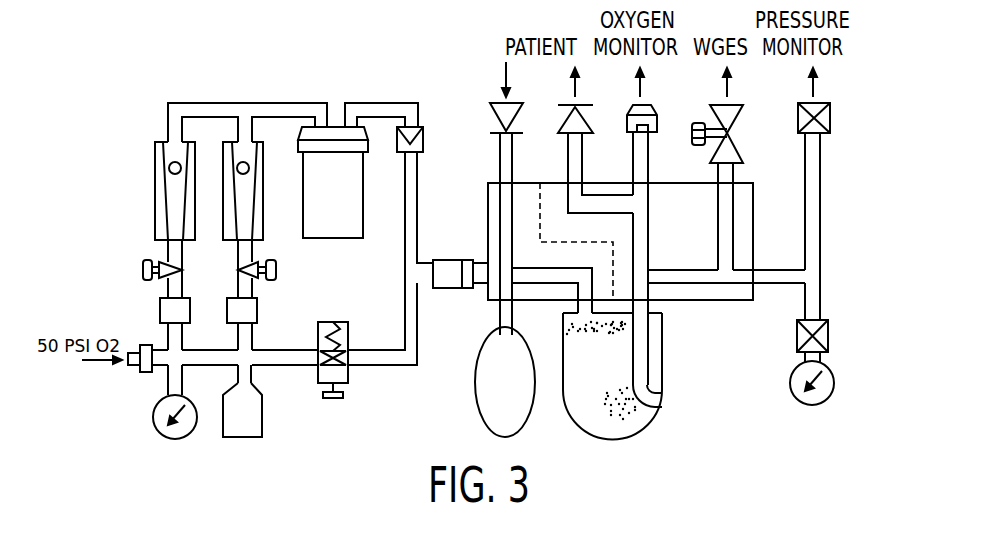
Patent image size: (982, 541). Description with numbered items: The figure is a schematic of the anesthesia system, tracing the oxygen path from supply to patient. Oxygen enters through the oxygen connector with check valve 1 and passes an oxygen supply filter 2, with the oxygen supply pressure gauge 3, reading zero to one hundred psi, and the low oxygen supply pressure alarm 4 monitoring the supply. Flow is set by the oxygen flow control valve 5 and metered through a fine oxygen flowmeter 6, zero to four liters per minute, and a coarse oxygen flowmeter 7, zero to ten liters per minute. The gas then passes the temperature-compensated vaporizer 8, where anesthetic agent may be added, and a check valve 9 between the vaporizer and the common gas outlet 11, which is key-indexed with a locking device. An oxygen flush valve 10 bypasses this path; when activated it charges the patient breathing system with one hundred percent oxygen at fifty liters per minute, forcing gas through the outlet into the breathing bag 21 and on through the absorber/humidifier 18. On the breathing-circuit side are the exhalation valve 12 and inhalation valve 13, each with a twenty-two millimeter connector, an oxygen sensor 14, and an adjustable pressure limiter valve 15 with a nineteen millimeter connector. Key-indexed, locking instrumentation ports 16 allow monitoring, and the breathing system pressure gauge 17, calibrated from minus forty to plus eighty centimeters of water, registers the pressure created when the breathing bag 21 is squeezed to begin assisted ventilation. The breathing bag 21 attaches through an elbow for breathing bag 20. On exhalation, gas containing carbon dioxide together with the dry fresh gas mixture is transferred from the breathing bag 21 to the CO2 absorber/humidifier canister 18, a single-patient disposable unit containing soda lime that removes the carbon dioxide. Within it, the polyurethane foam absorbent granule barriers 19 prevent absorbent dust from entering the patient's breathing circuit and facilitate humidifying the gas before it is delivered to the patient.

The oxygen connector with check valve 1 is at (145, 345).
The oxygen supply filter 2 is at (214, 323).
The oxygen supply pressure gauge 3 is at (152, 417).
The low oxygen supply pressure alarm 4 is at (262, 423).
The oxygen flow control valve 5 is at (214, 275).
The fine oxygen flowmeter 6 is at (155, 177).
The coarse oxygen flowmeter 7 is at (263, 187).
The vaporizer 8 is at (363, 187).
The check valve 9 is at (423, 137).
The oxygen flush valve 10 is at (340, 400).
The common gas outlet 11 is at (433, 290).
The exhalation valve 12 is at (490, 107).
The inhalation valve 13 is at (562, 123).
The oxygen sensor 14 is at (627, 123).
The adjustable pressure limiter valve 15 is at (693, 125).
The instrumentation ports 16 is at (798, 115).
The breathing system pressure gauge 17 is at (790, 383).
The CO2 absorber/humidifier canister 18 is at (663, 358).
The foam absorbent granule barriers 19 is at (580, 332).
The elbow for breathing bag 20 is at (512, 312).
The breathing bag 21 is at (475, 395).